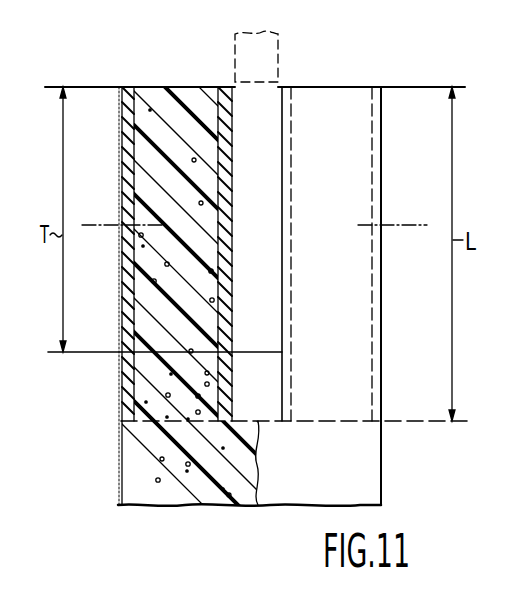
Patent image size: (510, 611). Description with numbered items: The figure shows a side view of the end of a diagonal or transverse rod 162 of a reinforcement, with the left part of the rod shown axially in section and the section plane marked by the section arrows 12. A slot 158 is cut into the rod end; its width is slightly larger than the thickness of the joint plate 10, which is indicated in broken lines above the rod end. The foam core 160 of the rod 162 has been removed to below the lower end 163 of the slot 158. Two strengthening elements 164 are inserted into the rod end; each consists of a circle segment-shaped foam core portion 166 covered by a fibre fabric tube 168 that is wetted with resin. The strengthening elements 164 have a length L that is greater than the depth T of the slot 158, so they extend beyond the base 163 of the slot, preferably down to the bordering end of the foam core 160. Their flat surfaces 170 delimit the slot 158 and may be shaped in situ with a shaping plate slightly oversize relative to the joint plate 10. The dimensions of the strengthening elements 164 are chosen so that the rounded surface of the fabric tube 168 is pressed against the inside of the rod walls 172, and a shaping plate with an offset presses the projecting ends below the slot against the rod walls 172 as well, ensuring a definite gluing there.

The joint plate 10 is at (270, 72).
The section line 12 is at (90, 200).
The slot 158 is at (268, 228).
The foam core 160 is at (228, 485).
The rod 162 is at (383, 473).
The lower end of the slot 163 is at (282, 352).
The strengthening elements 164 is at (161, 108).
The circle segment-shaped foam core portions 166 is at (164, 408).
The fibre fabric tube 168 is at (233, 142).
The flat surfaces 170 is at (228, 106).
The rod walls 172 is at (120, 98).